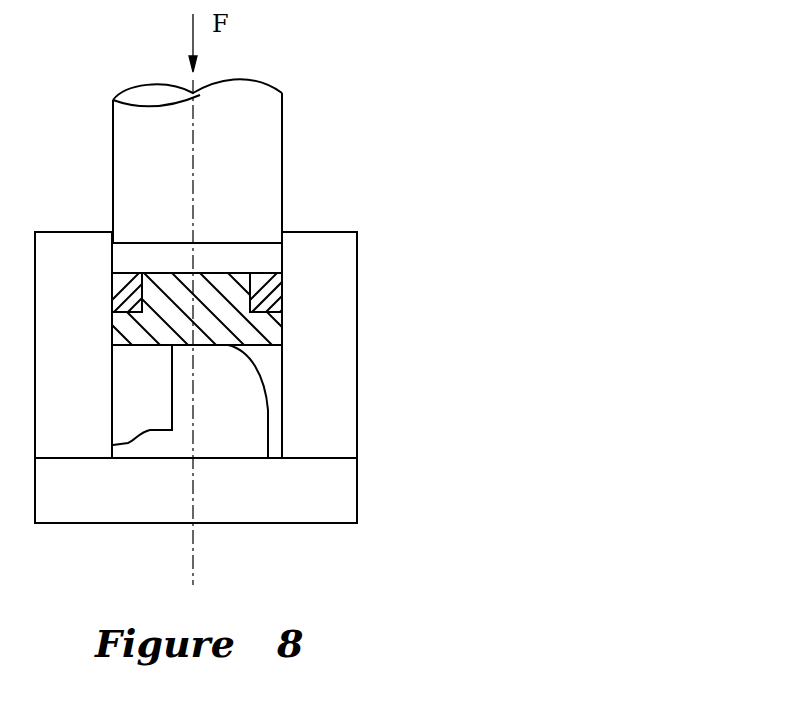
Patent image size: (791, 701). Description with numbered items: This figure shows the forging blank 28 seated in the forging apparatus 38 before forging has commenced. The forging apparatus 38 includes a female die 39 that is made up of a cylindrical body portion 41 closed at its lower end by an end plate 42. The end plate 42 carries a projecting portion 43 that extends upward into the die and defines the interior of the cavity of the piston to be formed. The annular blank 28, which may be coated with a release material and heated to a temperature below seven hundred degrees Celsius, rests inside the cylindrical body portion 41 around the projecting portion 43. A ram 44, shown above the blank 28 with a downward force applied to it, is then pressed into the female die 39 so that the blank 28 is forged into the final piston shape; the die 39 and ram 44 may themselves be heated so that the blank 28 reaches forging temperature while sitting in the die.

The forging blank 28 is at (133, 356).
The forging apparatus 38 is at (278, 376).
The female die 39 is at (366, 366).
The cylindrical body portion 41 is at (325, 422).
The end plate 42 is at (342, 494).
The projecting portion 43 is at (253, 465).
The ram 44 is at (258, 142).